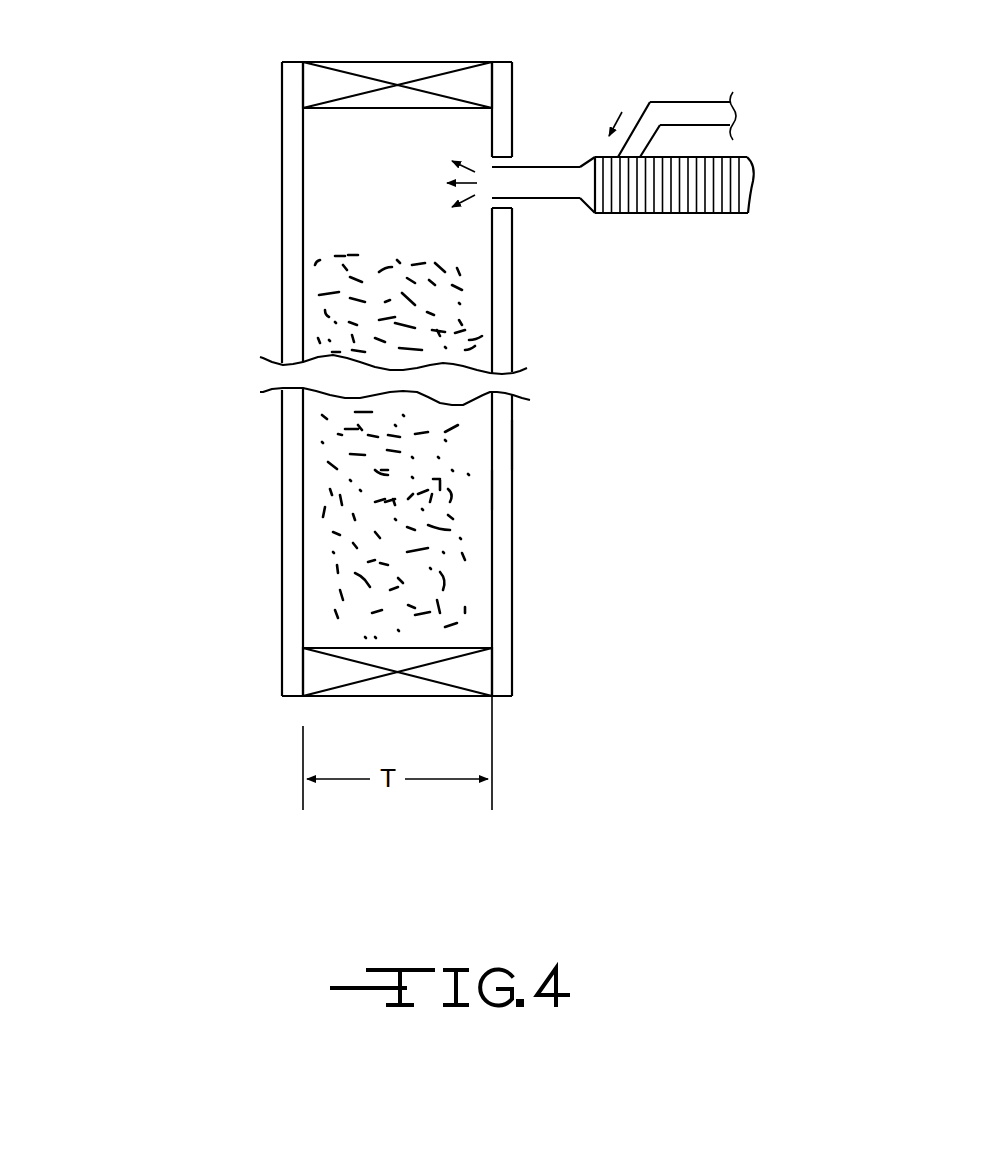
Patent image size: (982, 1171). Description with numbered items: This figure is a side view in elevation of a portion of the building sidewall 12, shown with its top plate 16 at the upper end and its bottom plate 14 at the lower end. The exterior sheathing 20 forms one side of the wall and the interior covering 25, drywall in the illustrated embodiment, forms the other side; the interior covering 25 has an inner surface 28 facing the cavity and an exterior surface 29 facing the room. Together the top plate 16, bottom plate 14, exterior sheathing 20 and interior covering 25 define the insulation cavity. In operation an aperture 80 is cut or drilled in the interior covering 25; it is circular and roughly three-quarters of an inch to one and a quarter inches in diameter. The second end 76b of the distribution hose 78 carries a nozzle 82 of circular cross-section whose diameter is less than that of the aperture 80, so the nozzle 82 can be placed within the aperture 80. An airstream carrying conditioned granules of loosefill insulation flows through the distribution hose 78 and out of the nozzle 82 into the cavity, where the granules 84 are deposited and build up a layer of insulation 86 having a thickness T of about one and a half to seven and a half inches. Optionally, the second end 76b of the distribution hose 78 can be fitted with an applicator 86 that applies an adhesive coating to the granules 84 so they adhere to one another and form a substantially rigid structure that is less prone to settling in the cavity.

The sidewall 12 is at (282, 170).
The bottom plate 14 is at (408, 698).
The top plate 16 is at (460, 62).
The exterior sheathing 20 is at (283, 543).
The interior covering 25 is at (512, 550).
The inner surface 28 is at (493, 478).
The exterior surface 29 is at (512, 440).
The second end 76b is at (566, 203).
The distribution hose 78 is at (733, 215).
The aperture 80 is at (513, 208).
The nozzle 82 is at (533, 160).
The conditioned granules of loosefill insulation 84 is at (330, 589).
The layer of insulation 86 is at (688, 100).